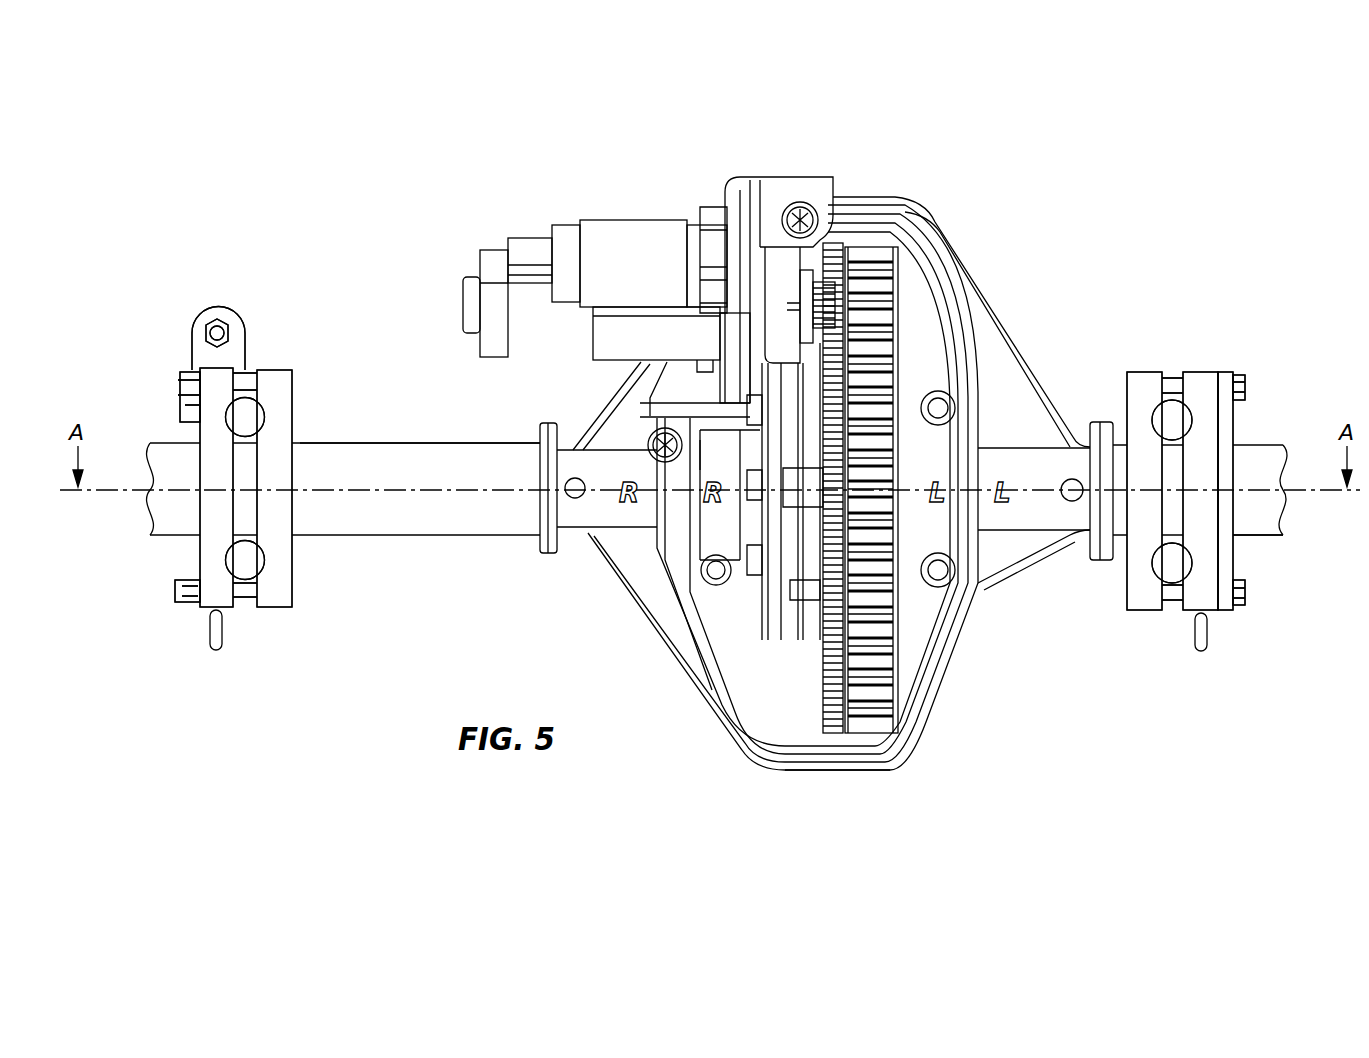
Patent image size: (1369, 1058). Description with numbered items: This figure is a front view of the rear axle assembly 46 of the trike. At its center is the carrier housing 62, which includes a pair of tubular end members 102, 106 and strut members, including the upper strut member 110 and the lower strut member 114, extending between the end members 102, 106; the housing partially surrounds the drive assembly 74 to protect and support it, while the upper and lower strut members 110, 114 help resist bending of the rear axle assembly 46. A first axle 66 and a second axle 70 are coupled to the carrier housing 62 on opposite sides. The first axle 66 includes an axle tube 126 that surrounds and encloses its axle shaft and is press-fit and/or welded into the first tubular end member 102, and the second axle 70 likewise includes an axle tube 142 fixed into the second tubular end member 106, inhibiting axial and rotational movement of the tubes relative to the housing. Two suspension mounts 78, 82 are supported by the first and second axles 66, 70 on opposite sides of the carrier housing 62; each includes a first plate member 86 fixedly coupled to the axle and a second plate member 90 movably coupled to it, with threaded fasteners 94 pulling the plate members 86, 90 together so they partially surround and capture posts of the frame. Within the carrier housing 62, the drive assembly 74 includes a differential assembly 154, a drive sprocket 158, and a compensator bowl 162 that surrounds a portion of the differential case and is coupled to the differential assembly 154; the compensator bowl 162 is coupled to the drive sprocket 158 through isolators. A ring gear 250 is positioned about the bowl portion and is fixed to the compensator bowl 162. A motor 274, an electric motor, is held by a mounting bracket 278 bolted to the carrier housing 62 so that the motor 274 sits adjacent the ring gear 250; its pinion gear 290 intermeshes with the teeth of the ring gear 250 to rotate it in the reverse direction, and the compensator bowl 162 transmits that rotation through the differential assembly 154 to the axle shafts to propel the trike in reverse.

The rear axle assembly 46 is at (1080, 166).
The carrier housing 62 is at (987, 350).
The first axle 66 is at (1257, 450).
The second axle 70 is at (362, 522).
The drive assembly 74 is at (812, 718).
The suspension mount 78 is at (1167, 628).
The suspension mount 82 is at (249, 620).
The first plate member 86 is at (213, 380).
The second plate member 90 is at (275, 377).
The threaded fasteners 94 is at (183, 372).
The first tubular end member 102 is at (1081, 438).
The second tubular end member 106 is at (574, 549).
The upper strut member 110 is at (850, 198).
The lower strut member 114 is at (880, 770).
The axle tube 126 is at (1257, 523).
The axle tube 142 is at (377, 453).
The differential assembly 154 is at (678, 553).
The drive sprocket 158 is at (897, 673).
The compensator bowl 162 is at (800, 600).
The ring gear 250 is at (830, 657).
The motor 274 is at (613, 232).
The mounting bracket 278 is at (780, 197).
The pinion gear 290 is at (833, 243).